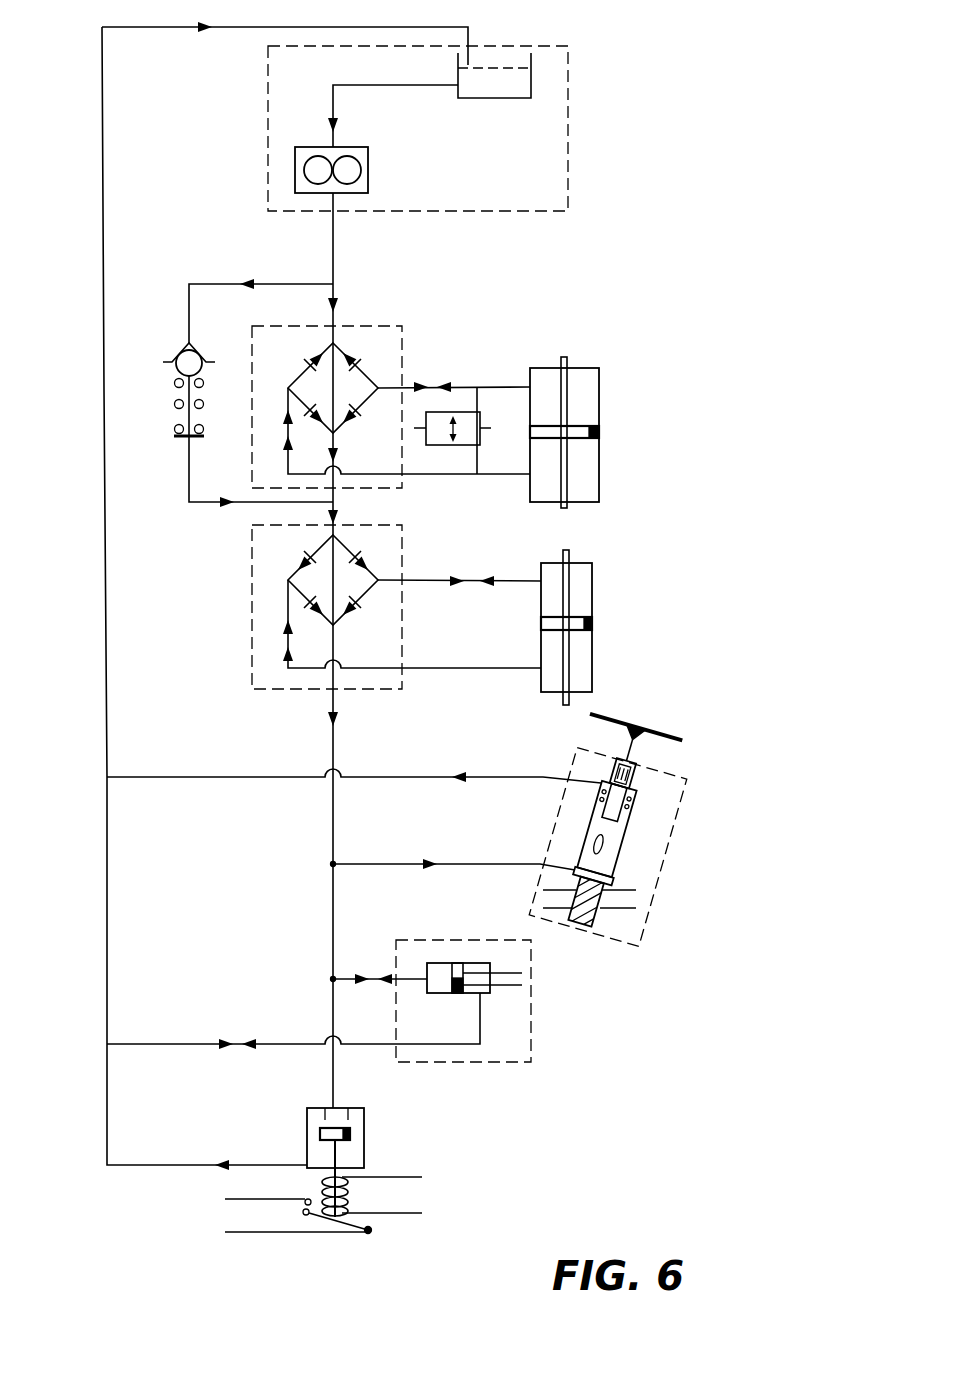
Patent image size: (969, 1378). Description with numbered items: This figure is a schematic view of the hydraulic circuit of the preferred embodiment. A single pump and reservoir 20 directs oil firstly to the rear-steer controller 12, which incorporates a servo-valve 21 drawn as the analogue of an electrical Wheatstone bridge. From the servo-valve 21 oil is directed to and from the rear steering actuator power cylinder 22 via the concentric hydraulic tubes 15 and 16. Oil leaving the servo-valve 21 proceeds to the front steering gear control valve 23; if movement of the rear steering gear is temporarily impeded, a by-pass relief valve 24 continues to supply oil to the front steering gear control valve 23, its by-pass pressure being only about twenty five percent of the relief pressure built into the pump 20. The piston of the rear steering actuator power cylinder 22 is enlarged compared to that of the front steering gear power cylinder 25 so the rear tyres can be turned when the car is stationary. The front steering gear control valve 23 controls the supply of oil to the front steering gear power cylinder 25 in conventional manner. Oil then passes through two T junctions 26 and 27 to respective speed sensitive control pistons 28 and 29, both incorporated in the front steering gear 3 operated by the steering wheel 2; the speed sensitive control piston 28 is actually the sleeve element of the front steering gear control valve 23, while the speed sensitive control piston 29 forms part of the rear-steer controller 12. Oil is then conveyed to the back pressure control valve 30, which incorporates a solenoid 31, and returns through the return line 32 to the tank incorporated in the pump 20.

The steering wheel 2 is at (653, 725).
The front steering gear 3 is at (684, 795).
The rear-steer controller 12 is at (532, 1020).
The concentric hydraulic tube 15 is at (455, 386).
The concentric hydraulic tube 16 is at (455, 474).
The pump and reservoir 20 is at (570, 100).
The servo-valve 21 is at (403, 330).
The rear steering actuator power cylinder 22 is at (600, 385).
The front steering gear control valve 23 is at (252, 548).
The by-pass relief valve 24 is at (170, 370).
The front steering gear power cylinder 25 is at (592, 590).
The T junction 26 is at (322, 866).
The T junction 27 is at (322, 981).
The speed sensitive control piston 28 is at (623, 845).
The speed sensitive control piston 29 is at (461, 963).
The back pressure control valve 30 is at (357, 1120).
The solenoid 31 is at (358, 1195).
The return line 32 is at (105, 740).